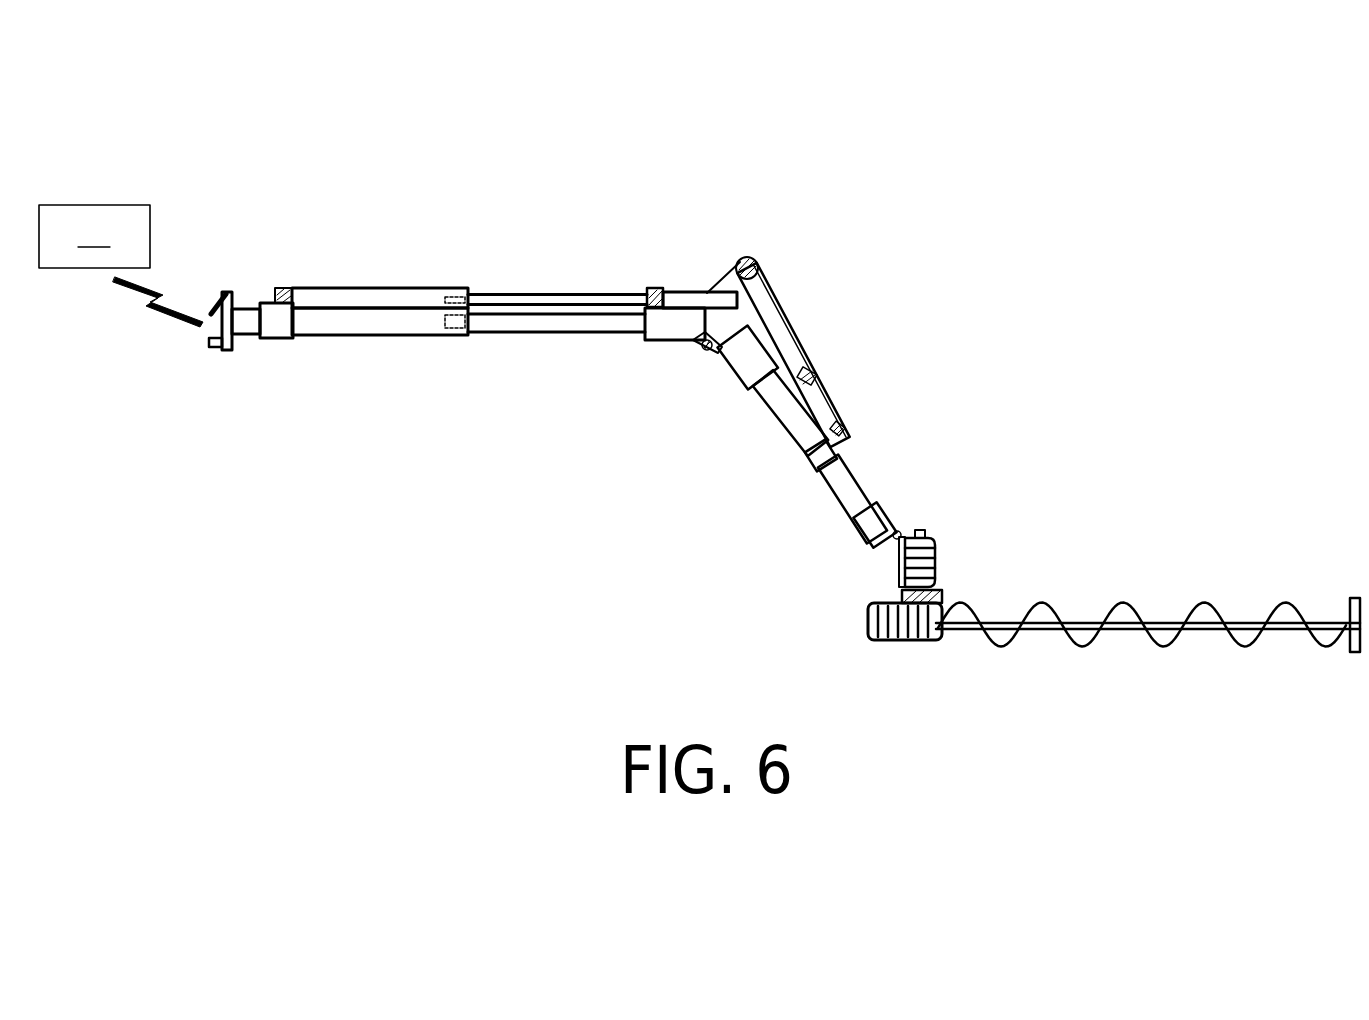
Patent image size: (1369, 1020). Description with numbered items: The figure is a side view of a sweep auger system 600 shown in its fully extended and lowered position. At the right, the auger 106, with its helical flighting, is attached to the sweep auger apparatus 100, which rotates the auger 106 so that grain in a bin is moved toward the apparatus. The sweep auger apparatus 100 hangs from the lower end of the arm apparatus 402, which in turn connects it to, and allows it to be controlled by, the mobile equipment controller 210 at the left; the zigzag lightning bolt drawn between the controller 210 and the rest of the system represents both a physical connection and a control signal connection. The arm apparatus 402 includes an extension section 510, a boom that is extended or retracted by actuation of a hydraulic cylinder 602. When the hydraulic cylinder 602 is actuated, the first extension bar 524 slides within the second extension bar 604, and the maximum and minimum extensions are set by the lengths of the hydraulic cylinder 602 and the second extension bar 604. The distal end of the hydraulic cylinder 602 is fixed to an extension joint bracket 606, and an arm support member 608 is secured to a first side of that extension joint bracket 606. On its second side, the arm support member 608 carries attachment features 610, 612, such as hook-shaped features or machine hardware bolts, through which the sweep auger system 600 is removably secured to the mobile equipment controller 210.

The sweep auger system 600 is at (1126, 108).
The controller 210 is at (121, 266).
The attachment feature 610 is at (213, 306).
The attachment feature 612 is at (213, 342).
The arm support member 608 is at (227, 297).
The extension joint bracket 606 is at (271, 342).
The hydraulic cylinder 602 is at (377, 289).
The second extension bar 604 is at (420, 337).
The extension section 510 is at (506, 286).
The first extension bar 524 is at (615, 332).
The arm apparatus 402 is at (764, 222).
The sweep auger apparatus 100 is at (948, 505).
The auger 106 is at (1111, 581).